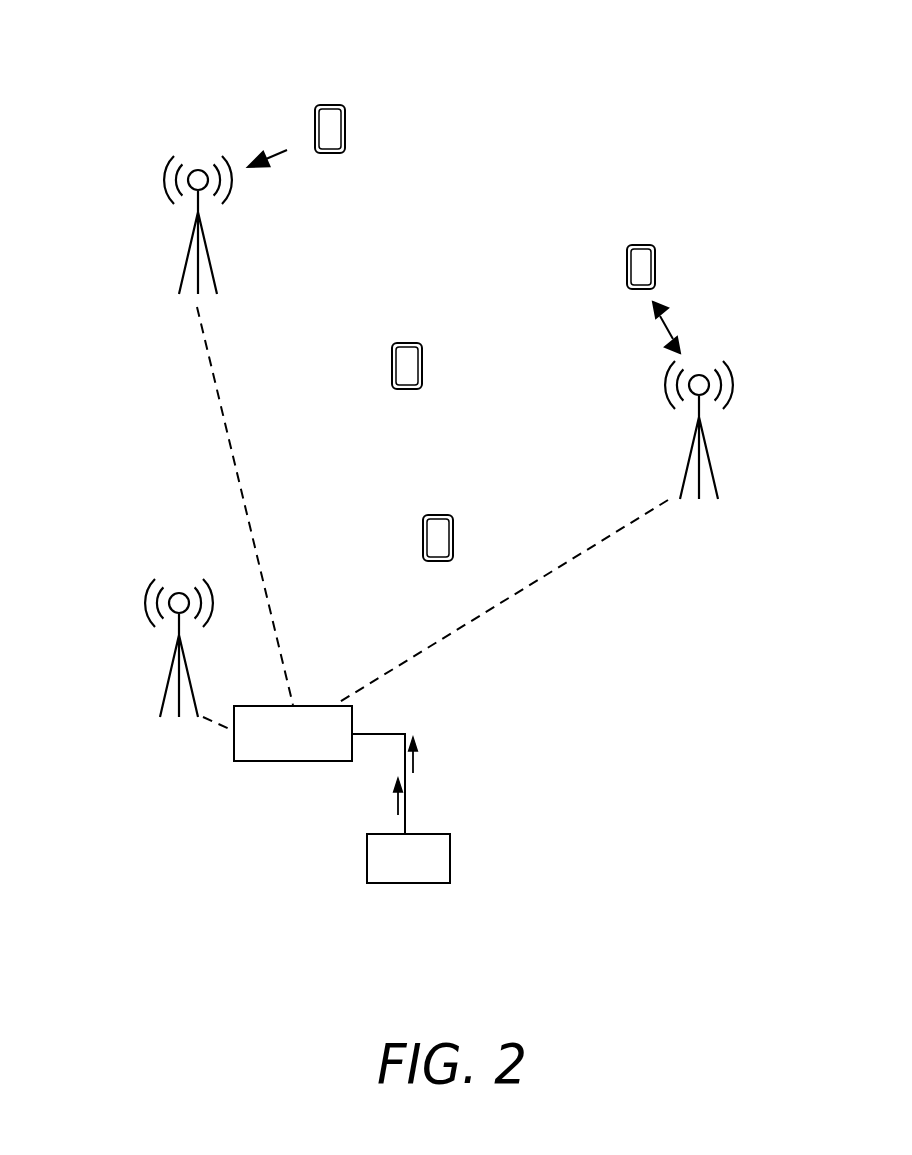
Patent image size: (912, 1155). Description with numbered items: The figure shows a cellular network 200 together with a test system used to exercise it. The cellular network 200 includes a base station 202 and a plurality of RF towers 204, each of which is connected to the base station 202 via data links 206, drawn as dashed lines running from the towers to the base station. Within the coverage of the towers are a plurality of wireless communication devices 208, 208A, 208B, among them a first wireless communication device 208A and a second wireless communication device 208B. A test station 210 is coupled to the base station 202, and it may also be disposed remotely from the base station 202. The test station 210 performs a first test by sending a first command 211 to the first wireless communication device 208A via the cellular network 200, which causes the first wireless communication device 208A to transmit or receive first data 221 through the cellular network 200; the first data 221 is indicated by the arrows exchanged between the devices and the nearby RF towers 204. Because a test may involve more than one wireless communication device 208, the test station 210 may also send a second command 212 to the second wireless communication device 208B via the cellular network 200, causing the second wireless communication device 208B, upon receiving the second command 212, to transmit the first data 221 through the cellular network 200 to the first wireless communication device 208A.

The cellular network 200 is at (188, 43).
The base station 202 is at (319, 770).
The RF towers 204 is at (148, 257).
The data links 206 is at (242, 472).
The wireless communication devices 208 is at (392, 365).
The first wireless communication device 208A is at (627, 267).
The second wireless communication device 208B is at (345, 122).
The test station 210 is at (408, 858).
The first command 211 is at (415, 753).
The second command 212 is at (395, 803).
The first data 221 is at (287, 150).